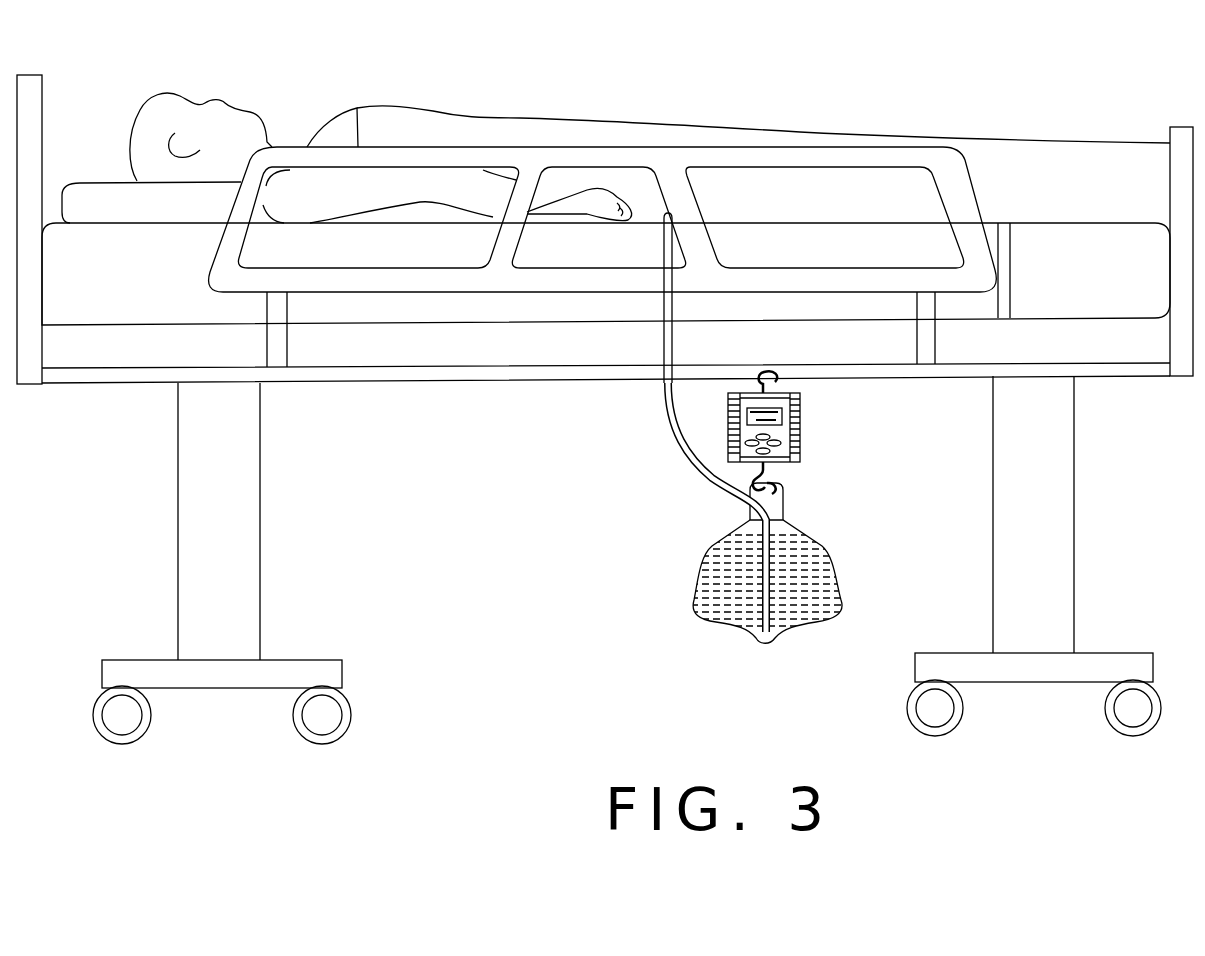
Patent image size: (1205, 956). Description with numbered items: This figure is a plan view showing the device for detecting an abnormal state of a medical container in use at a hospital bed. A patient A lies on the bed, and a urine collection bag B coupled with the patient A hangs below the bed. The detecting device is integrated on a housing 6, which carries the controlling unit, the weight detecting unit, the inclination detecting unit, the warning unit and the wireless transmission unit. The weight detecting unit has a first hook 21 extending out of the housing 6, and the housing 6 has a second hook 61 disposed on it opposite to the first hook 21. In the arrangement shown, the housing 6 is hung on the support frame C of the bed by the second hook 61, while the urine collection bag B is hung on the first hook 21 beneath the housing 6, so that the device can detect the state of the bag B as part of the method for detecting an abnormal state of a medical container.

The patient A is at (377, 127).
The urine collection bag B is at (692, 595).
The support frame C is at (555, 385).
The housing 6 is at (803, 415).
The first hook 21 is at (768, 470).
The second hook 61 is at (780, 375).